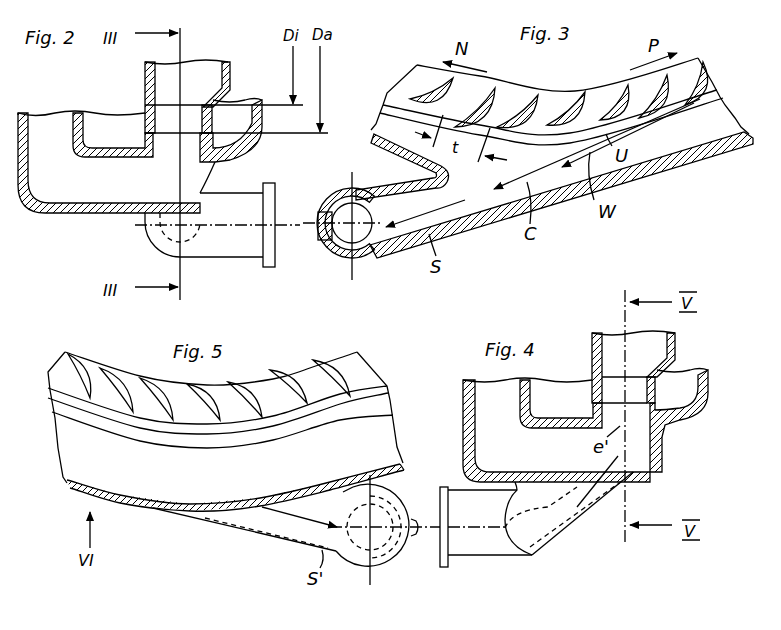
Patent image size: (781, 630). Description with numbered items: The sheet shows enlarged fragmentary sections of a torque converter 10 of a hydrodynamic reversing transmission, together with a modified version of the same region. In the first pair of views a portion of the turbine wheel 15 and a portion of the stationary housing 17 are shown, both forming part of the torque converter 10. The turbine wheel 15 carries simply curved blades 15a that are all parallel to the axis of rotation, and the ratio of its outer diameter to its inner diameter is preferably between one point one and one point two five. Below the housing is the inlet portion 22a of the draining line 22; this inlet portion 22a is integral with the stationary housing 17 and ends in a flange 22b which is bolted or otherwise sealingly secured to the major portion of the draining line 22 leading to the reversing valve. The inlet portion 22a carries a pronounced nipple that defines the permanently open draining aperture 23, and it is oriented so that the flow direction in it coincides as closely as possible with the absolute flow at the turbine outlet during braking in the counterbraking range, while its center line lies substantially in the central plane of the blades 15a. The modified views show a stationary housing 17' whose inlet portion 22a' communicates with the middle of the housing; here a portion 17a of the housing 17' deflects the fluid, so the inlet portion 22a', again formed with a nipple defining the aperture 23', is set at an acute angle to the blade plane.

In FIG. 2, the torque converter 10 is at (124, 98).
In FIG. 2, the turbine wheel 15 is at (232, 82).
In FIG. 3, the turbine wheel 15 is at (511, 96).
In FIG. 5, the turbine wheel 15 is at (370, 372).
In FIG. 4, the turbine wheel 15 is at (677, 355).
In FIG. 3, the turbine wheel blades 15a is at (586, 90).
In FIG. 2, the stationary housing 17 is at (140, 179).
In FIG. 3, the stationary housing 17 is at (561, 195).
In FIG. 5, the stationary housing 17' is at (247, 461).
In FIG. 4, the stationary housing 17' is at (537, 430).
In FIG. 4, the housing portion 17a is at (666, 466).
In FIG. 3, the draining line 22 is at (447, 234).
In FIG. 2, the inlet portion of the draining line 22a is at (204, 224).
In FIG. 5, the inlet portion of the draining line 22a' is at (281, 550).
In FIG. 4, the inlet portion of the draining line 22a' is at (536, 528).
In FIG. 2, the flange 22b is at (277, 189).
In FIG. 3, the flange 22b is at (367, 256).
In FIG. 3, the draining aperture 23 is at (340, 232).
In FIG. 5, the draining aperture 23' is at (385, 533).